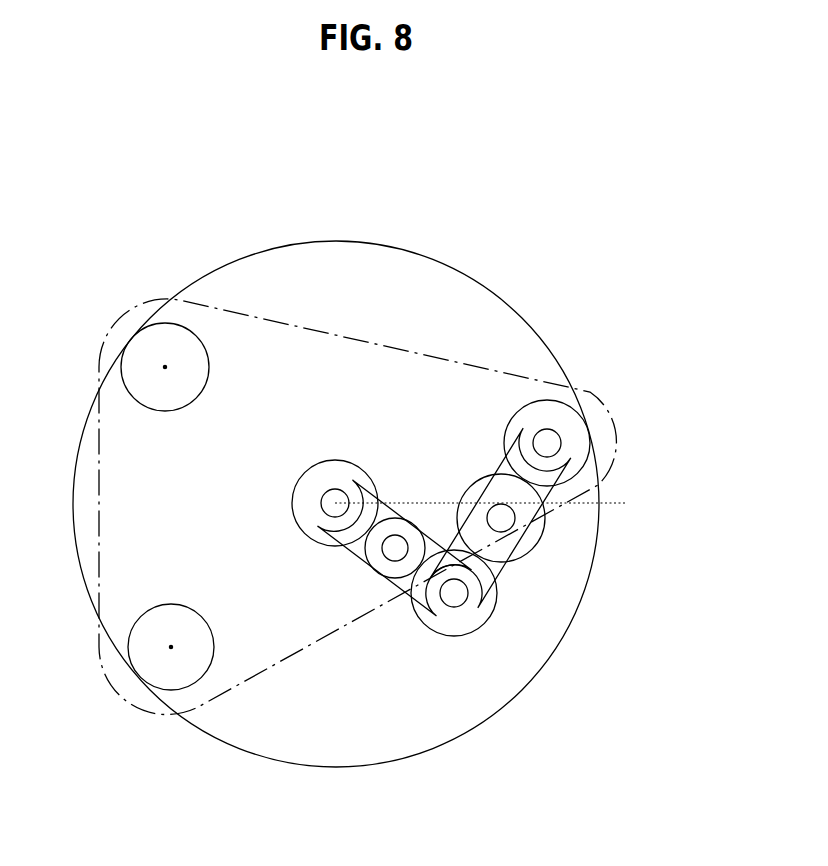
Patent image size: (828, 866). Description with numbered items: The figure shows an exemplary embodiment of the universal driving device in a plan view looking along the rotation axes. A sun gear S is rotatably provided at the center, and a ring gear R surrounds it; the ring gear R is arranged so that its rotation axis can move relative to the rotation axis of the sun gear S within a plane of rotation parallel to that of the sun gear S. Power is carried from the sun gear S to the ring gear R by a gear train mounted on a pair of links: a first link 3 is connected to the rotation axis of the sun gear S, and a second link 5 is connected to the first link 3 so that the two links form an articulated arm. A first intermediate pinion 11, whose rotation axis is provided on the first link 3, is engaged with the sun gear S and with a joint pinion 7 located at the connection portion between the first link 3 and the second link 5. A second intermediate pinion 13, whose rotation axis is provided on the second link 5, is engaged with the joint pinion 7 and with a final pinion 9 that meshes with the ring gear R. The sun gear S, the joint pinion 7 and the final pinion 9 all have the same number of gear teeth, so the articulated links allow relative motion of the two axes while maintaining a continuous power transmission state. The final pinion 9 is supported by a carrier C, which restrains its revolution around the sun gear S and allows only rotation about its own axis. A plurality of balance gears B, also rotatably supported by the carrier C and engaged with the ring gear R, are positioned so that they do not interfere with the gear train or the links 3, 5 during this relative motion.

The first link 3 is at (407, 583).
The second link 5 is at (498, 562).
The joint pinion 7 is at (466, 627).
The final pinion 9 is at (565, 418).
The first intermediate pinion 11 is at (375, 570).
The second intermediate pinion 13 is at (533, 540).
The balance gear B is at (150, 352).
The sun gear S is at (343, 462).
The ring gear R is at (447, 263).
The carrier C is at (473, 365).